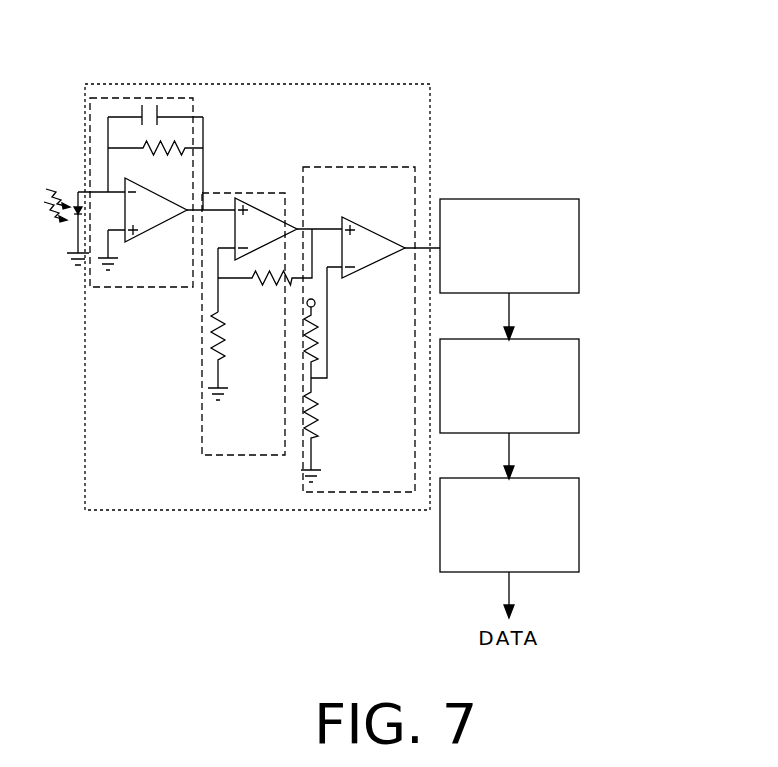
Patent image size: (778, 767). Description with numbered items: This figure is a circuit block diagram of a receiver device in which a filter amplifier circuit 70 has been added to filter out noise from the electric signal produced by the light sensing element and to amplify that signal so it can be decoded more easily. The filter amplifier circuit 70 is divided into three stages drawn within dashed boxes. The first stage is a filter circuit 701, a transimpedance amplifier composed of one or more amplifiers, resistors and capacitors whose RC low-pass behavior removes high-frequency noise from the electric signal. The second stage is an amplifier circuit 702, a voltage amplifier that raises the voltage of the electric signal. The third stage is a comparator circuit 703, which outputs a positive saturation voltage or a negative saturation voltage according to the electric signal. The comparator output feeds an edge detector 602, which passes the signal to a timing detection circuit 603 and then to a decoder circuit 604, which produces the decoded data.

The filter amplifier circuit 70 is at (125, 501).
The filter circuit 701 is at (102, 123).
The amplifier circuit 702 is at (240, 438).
The comparator circuit 703 is at (365, 457).
The edge detector 602 is at (550, 215).
The timing detection circuit 603 is at (579, 385).
The decoder circuit 604 is at (579, 522).